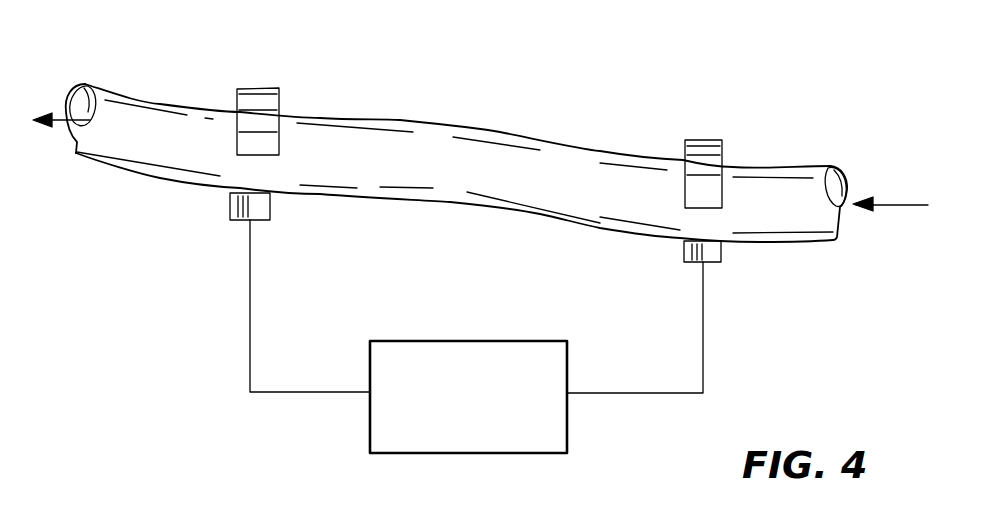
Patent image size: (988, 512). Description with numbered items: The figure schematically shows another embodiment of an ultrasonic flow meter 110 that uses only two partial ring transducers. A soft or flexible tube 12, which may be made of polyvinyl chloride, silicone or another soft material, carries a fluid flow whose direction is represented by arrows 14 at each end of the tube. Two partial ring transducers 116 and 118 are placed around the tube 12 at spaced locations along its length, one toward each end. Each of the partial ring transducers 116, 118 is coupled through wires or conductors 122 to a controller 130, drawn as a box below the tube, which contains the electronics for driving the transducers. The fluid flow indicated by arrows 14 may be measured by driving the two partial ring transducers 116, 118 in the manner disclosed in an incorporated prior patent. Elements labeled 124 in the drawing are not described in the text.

The tube 12 is at (442, 120).
The arrows 14 is at (70, 123).
The ultrasonic flow meter 110 is at (580, 131).
The partial ring transducer 116 is at (707, 138).
The partial ring transducer 118 is at (270, 88).
The wires or conductors 122 is at (251, 313).
The sensor connector 124 is at (273, 171).
The controller 130 is at (567, 420).